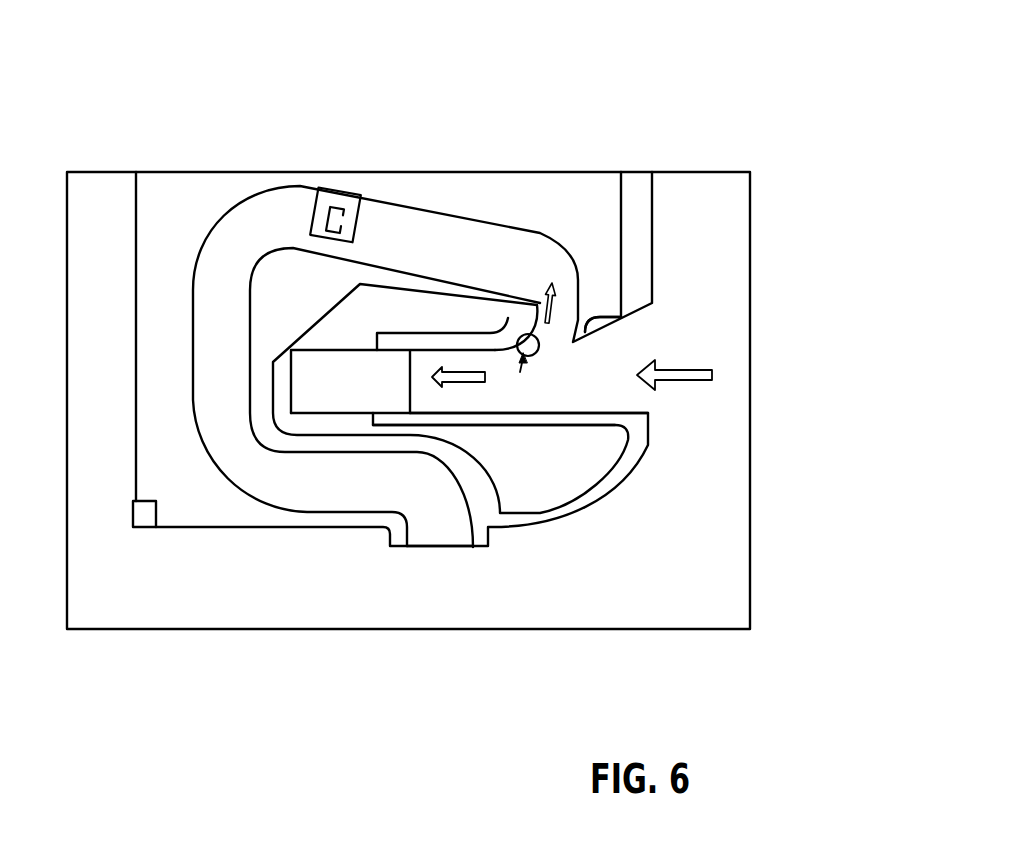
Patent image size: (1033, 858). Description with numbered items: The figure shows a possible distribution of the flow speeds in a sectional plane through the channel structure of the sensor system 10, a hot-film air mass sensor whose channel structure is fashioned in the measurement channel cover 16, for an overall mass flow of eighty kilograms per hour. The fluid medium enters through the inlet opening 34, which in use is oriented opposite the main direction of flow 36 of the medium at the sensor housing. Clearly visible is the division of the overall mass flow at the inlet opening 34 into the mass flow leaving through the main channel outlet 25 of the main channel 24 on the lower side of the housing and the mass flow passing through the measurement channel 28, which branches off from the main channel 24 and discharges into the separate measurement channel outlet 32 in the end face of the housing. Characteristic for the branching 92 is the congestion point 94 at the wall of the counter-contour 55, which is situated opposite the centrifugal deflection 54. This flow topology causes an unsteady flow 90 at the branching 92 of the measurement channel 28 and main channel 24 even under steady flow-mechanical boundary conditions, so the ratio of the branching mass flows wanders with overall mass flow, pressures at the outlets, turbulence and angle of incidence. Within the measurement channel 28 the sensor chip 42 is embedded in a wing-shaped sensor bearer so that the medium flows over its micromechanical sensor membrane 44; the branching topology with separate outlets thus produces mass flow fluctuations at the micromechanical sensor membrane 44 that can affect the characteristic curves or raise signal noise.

The sensor system 10 is at (437, 336).
The measurement channel cover 16 is at (527, 185).
The main channel 24 is at (496, 398).
The main channel outlet 25 is at (428, 398).
The measurement channel 28 is at (500, 270).
The measurement channel outlet 32 is at (447, 537).
The inlet opening 34 is at (620, 397).
The main direction of flow 36 is at (712, 375).
The sensor chip 42 is at (342, 200).
The micromechanical sensor membrane 44 is at (342, 222).
The centrifugal deflection 54 is at (627, 317).
The counter-contour 55 is at (517, 330).
The unsteady flow 90 is at (547, 322).
The branching 92 is at (520, 375).
The congestion point 94 is at (530, 354).